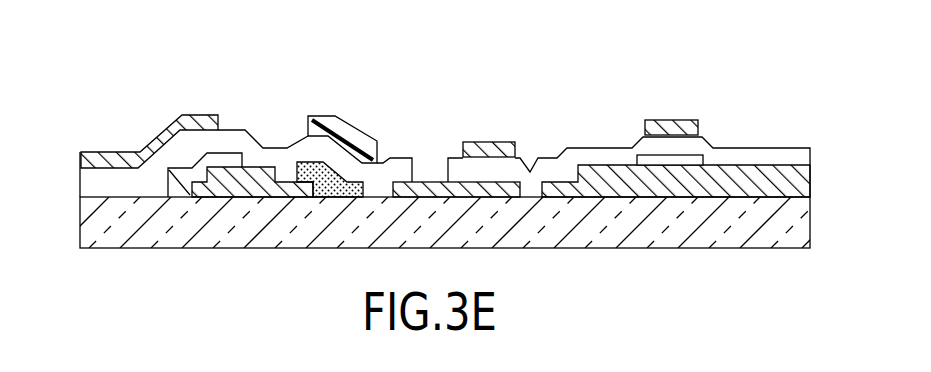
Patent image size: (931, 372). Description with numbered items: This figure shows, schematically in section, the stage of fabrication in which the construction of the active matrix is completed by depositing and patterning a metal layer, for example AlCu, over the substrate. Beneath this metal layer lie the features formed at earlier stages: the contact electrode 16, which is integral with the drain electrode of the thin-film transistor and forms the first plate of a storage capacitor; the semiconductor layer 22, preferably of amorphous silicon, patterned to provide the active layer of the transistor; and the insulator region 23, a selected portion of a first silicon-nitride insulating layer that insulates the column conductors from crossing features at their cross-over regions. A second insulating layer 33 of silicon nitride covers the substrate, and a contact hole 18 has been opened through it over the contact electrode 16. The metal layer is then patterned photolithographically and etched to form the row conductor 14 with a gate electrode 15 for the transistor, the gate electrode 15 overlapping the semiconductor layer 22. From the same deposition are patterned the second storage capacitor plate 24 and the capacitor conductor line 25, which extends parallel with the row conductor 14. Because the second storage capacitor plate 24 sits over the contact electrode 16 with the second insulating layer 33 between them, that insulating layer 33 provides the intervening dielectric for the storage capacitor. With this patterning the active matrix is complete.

The row conductor 14 is at (189, 115).
The gate electrode 15 is at (329, 123).
The contact electrode 16 is at (422, 186).
The contact hole 18 is at (434, 148).
The semiconductor layer 22 is at (300, 160).
The insulator region 23 is at (645, 160).
The second storage capacitor plate 24 is at (512, 142).
The capacitor conductor line 25 is at (688, 128).
The second insulating layer 33 is at (758, 157).